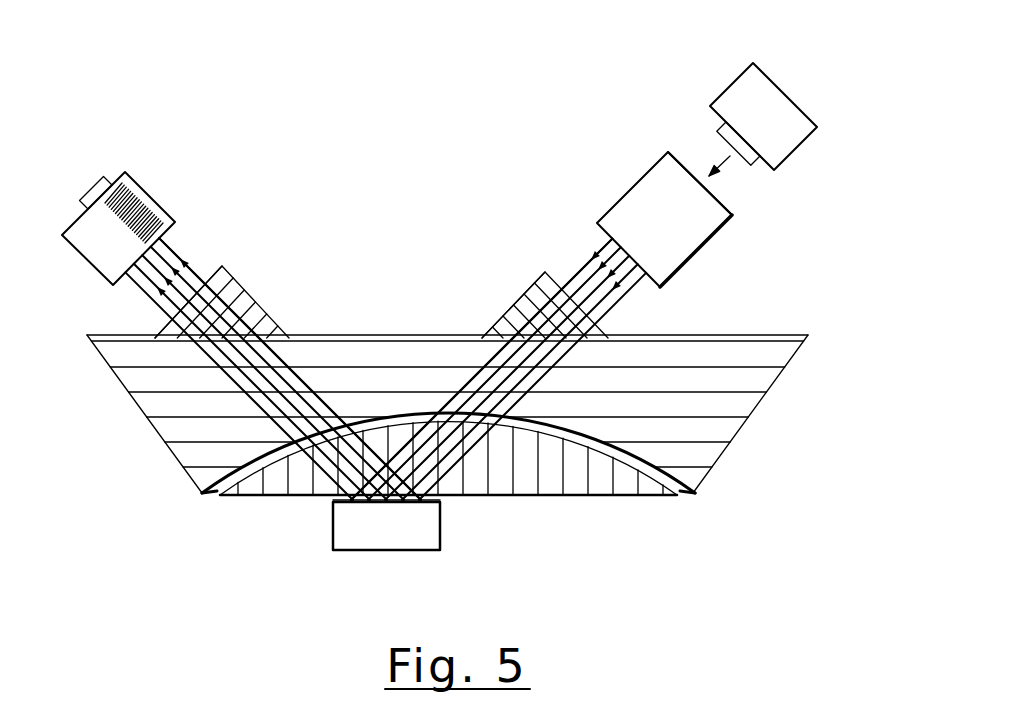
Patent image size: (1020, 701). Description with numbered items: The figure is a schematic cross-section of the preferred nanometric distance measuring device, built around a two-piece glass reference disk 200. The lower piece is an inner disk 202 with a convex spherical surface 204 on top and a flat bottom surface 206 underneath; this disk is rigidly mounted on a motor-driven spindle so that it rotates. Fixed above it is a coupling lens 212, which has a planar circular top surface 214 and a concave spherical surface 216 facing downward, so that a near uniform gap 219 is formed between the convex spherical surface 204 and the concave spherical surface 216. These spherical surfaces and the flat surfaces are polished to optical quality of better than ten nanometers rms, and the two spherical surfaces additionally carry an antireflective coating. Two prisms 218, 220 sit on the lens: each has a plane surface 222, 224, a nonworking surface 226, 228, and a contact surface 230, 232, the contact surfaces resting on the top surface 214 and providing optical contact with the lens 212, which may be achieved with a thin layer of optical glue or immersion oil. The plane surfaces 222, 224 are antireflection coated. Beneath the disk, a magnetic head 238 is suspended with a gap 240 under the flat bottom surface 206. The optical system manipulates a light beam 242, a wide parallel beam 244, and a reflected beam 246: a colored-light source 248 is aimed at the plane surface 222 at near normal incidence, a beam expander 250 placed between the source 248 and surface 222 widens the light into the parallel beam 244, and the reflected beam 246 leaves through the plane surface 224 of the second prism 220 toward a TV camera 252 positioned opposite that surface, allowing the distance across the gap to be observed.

The two-piece glass reference disk 200 is at (459, 444).
The inner disk 202 is at (612, 483).
The convex spherical surface 204 is at (678, 337).
The flat bottom surface 206 is at (568, 498).
The coupling lens 212 is at (737, 408).
The planar circular top surface 214 is at (117, 335).
The concave spherical surface 216 is at (690, 497).
The prism 218 is at (237, 319).
The near uniform gap 219 is at (216, 497).
The prism 220 is at (562, 323).
The plane surface 222 is at (548, 270).
The plane surface 224 is at (213, 275).
The nonworking surface 226 is at (240, 282).
The nonworking surface 228 is at (519, 298).
The contact surface 230 is at (280, 333).
The contact surface 232 is at (498, 334).
The magnetic head 238 is at (391, 532).
The gap 240 is at (440, 498).
The light beam 242 is at (702, 182).
The wide parallel beam 244 is at (635, 290).
The reflected beam 246 is at (160, 318).
The colored-light source 248 is at (767, 117).
The beam expander 250 is at (658, 197).
The TV camera 252 is at (97, 223).